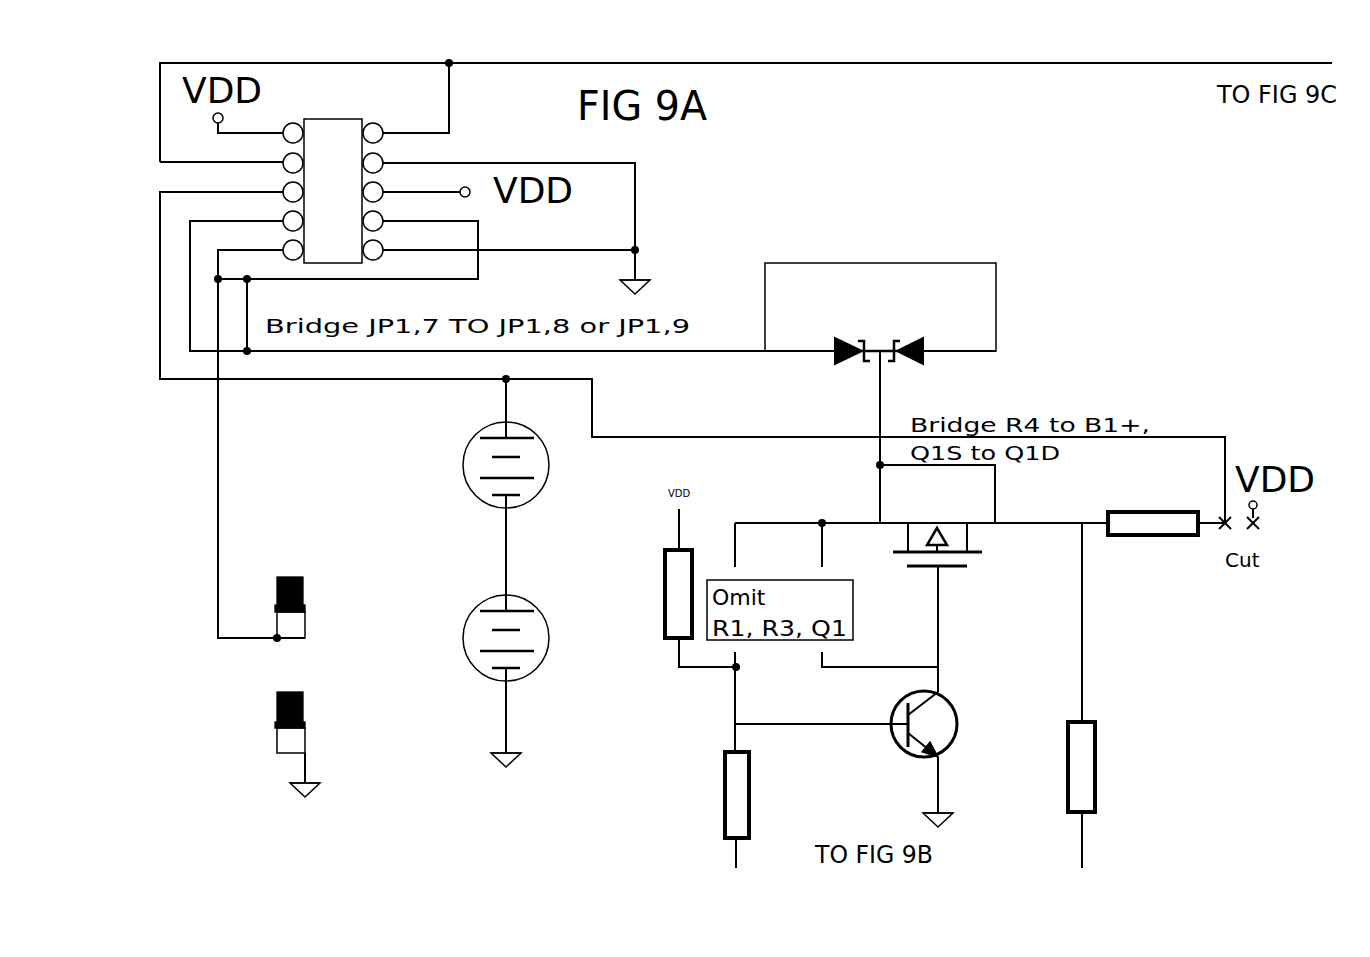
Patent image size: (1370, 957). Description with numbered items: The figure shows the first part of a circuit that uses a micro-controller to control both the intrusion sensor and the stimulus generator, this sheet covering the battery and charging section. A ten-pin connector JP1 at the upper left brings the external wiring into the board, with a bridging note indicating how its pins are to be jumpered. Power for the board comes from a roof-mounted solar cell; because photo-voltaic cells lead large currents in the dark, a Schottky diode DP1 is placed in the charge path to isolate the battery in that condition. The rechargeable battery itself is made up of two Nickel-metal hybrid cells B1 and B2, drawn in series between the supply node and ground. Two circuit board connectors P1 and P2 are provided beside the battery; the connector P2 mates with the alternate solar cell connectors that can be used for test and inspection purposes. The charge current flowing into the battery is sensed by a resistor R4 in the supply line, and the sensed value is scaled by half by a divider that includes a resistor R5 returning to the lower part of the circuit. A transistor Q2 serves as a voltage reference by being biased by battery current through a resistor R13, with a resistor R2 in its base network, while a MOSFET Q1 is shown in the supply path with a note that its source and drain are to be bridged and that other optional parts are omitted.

The connector CONN_5X2 JP1 is at (338, 179).
The Schottky diode DP1 is at (880, 331).
The Nickel-metal hybrid cell B1 is at (483, 469).
The Nickel-metal hybrid cell B2 is at (483, 642).
The test point 4900 P1 is at (325, 599).
The circuit board connector P2 is at (325, 714).
The resistor R13 is at (643, 594).
The resistor 1k0 R2 is at (708, 795).
The resistor R4 is at (1153, 500).
The divider resistor R5 is at (1047, 767).
The P-channel MOSFET NDS332P Q1 is at (978, 567).
The transistor Q2 is at (877, 745).